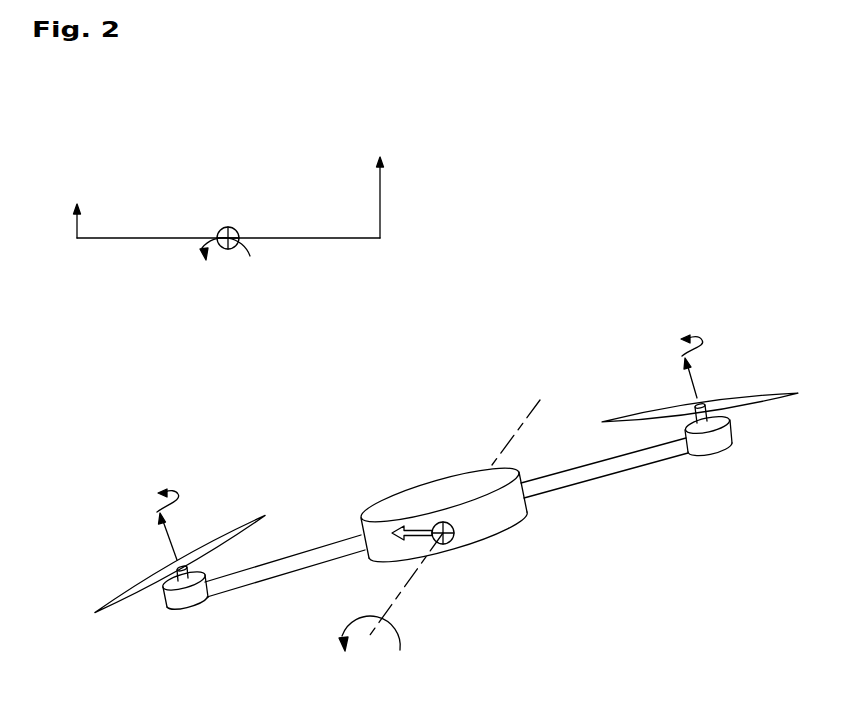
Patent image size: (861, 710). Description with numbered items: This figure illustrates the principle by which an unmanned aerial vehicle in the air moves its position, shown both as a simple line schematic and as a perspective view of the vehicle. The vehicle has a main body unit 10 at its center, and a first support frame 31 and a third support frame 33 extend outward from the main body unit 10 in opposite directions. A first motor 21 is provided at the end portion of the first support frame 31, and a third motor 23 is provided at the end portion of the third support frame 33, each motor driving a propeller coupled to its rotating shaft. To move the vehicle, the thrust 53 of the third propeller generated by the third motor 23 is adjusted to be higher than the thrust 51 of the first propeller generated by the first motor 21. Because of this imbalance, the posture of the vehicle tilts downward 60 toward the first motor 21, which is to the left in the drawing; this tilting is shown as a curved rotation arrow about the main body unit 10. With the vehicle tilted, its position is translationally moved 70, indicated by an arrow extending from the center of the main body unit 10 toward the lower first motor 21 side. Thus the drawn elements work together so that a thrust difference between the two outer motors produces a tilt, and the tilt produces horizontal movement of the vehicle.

The main body unit 10 is at (240, 249).
The first motor 21 is at (190, 598).
The third motor 23 is at (718, 443).
The first support frame 31 is at (136, 248).
The third support frame 33 is at (336, 248).
The thrust of the first propeller 51 is at (82, 226).
The thrust of the third propeller 53 is at (382, 210).
The downward tilt of posture 60 is at (242, 210).
The translational movement of position 70 is at (408, 530).